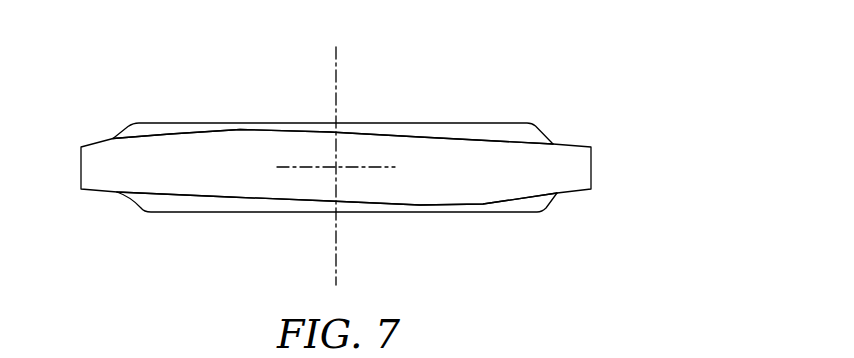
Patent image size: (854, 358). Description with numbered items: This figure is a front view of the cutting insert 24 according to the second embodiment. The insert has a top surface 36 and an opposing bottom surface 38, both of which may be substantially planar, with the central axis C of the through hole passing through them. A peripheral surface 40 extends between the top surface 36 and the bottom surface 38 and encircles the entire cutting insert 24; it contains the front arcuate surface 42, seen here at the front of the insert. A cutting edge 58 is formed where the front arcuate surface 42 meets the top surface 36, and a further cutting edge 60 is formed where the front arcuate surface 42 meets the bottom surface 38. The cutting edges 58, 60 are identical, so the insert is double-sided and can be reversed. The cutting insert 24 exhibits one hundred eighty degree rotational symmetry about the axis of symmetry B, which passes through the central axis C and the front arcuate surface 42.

The cutting insert 24 is at (122, 75).
The top surface 36 is at (385, 123).
The bottom surface 38 is at (492, 212).
The peripheral surface 40 is at (387, 188).
The front arcuate surface 42 is at (295, 143).
The cutting edge 58 is at (466, 140).
The further cutting edge 60 is at (205, 195).